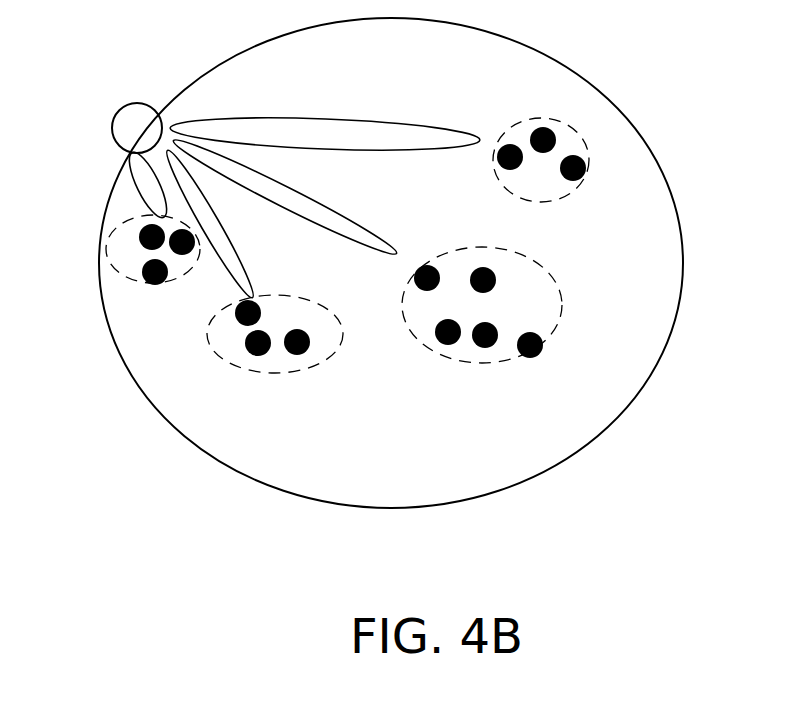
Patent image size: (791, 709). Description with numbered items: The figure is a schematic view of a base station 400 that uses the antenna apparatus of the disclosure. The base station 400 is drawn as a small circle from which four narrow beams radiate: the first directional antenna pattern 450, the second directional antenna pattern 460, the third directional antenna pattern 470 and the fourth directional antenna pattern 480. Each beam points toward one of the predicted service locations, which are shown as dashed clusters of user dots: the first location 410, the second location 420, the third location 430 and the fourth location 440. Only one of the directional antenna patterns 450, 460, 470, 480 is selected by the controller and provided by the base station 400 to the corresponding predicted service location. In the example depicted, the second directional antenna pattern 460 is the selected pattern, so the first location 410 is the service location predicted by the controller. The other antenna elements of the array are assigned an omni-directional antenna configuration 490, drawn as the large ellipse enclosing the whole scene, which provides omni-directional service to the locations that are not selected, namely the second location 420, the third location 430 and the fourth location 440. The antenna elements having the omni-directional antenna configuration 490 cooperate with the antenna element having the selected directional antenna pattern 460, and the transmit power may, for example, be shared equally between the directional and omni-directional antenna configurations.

The base station 400 is at (137, 100).
The location #1 410 is at (480, 248).
The location #2 420 is at (538, 118).
The location #3 430 is at (283, 297).
The location #4 440 is at (115, 208).
The directional antenna pattern 1 450 is at (318, 118).
The directional antenna pattern 2 460 is at (323, 203).
The directional antenna pattern 3 470 is at (210, 212).
The directional antenna pattern 4 480 is at (135, 195).
The omni-directional antenna configuration 490 is at (495, 495).